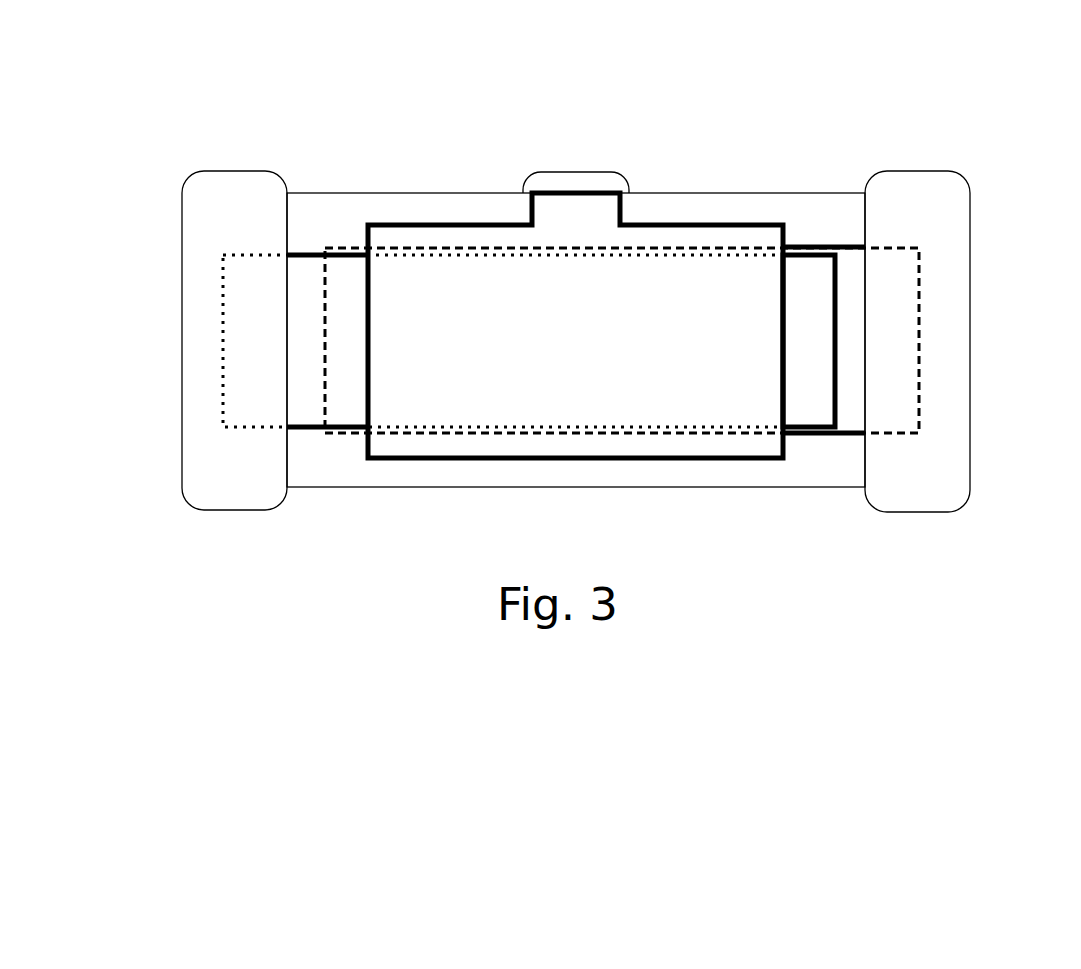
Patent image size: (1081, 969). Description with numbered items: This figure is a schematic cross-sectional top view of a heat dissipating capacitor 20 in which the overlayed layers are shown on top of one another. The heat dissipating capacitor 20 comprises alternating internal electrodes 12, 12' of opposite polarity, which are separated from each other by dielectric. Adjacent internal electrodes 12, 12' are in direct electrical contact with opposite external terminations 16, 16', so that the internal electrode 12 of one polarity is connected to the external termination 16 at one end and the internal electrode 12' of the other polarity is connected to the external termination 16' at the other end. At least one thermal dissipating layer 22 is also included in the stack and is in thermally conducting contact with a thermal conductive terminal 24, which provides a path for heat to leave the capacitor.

The heat dissipating capacitor 20 is at (802, 181).
The thermal dissipating layer 22 is at (417, 223).
The thermal conductive terminal 24 is at (592, 185).
The external termination 16 is at (189, 340).
The external termination 16' is at (958, 341).
The internal electrode 12 is at (503, 426).
The internal electrode 12' is at (622, 435).